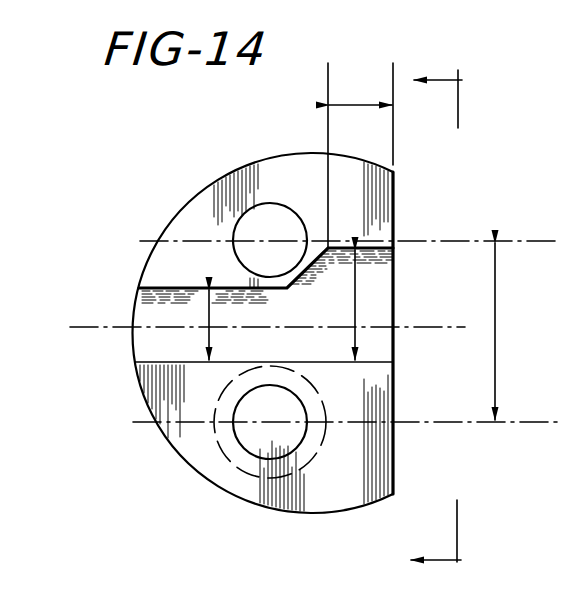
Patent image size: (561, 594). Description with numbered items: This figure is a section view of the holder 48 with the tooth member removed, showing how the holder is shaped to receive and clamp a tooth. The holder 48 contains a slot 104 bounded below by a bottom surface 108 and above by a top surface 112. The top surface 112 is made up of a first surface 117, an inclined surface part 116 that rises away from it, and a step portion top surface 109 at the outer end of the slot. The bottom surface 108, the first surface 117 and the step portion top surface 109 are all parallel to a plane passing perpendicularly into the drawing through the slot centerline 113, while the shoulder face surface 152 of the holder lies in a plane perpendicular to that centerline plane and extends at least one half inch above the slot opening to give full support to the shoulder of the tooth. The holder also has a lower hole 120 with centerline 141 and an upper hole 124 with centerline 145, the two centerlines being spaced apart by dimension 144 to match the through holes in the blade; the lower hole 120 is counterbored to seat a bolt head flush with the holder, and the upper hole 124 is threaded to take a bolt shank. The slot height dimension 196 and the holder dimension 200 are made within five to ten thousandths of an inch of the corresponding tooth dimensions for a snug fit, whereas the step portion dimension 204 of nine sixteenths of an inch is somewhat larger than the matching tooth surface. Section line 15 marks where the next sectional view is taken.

The holder 48 is at (172, 207).
The upper hole 124 is at (266, 204).
The lower hole 120 is at (283, 448).
The slot 104 is at (234, 334).
The bottom surface 108 is at (146, 362).
The top surface 112 is at (155, 290).
The slot centerline 113 is at (76, 325).
The slot height dimension 196 is at (206, 314).
The inclined surface part 116 is at (320, 263).
The first surface 117 is at (272, 290).
The step portion top surface 109 is at (374, 257).
The shoulder face surface 152 is at (395, 188).
The centerline 145 is at (418, 240).
The holder dimension 200 is at (356, 291).
The step portion dimension 204 is at (358, 108).
The hole spacing dimension 144 is at (496, 345).
The centerline 141 is at (472, 425).
The section line 15- 15 is at (451, 321).